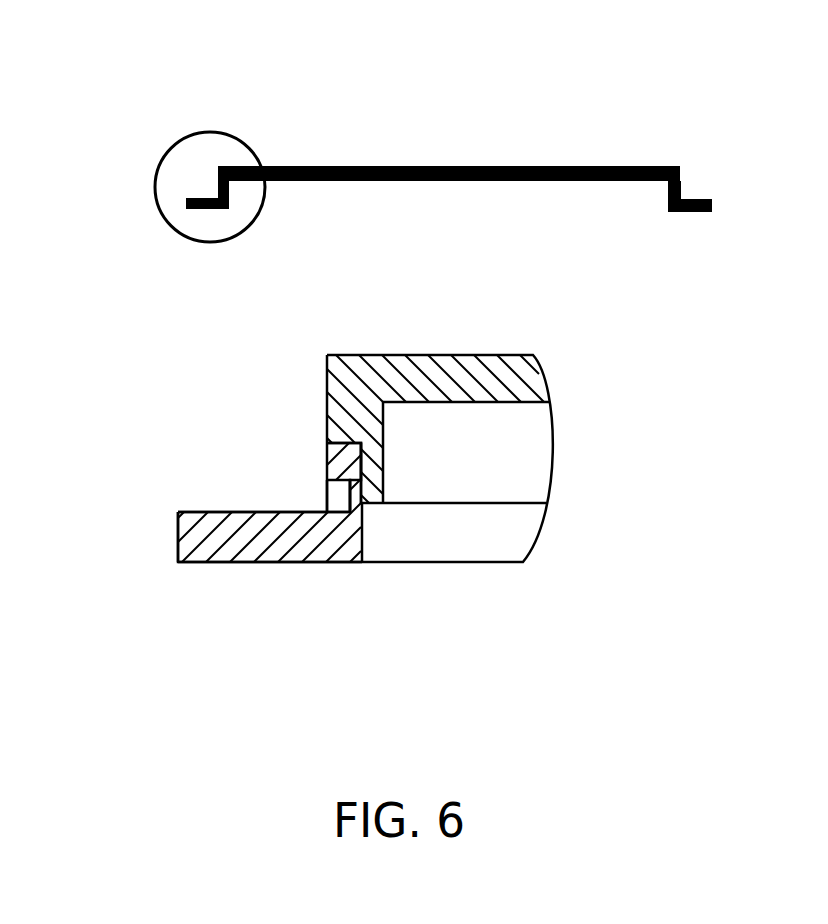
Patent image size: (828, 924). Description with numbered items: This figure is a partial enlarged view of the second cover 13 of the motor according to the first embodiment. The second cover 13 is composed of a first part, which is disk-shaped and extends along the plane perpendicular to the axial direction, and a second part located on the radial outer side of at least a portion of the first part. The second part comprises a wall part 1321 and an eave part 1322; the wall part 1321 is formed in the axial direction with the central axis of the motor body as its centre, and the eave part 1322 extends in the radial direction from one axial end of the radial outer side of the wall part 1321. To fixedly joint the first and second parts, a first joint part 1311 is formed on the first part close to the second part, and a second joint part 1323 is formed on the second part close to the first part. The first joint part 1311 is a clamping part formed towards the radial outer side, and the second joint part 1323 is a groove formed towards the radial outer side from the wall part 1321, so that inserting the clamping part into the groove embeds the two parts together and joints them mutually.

The second cover 13 is at (385, 160).
The first joint part 1311 is at (366, 473).
The wall part 1321 is at (338, 458).
The eave part 1322 is at (192, 531).
The second joint part 1323 is at (342, 485).